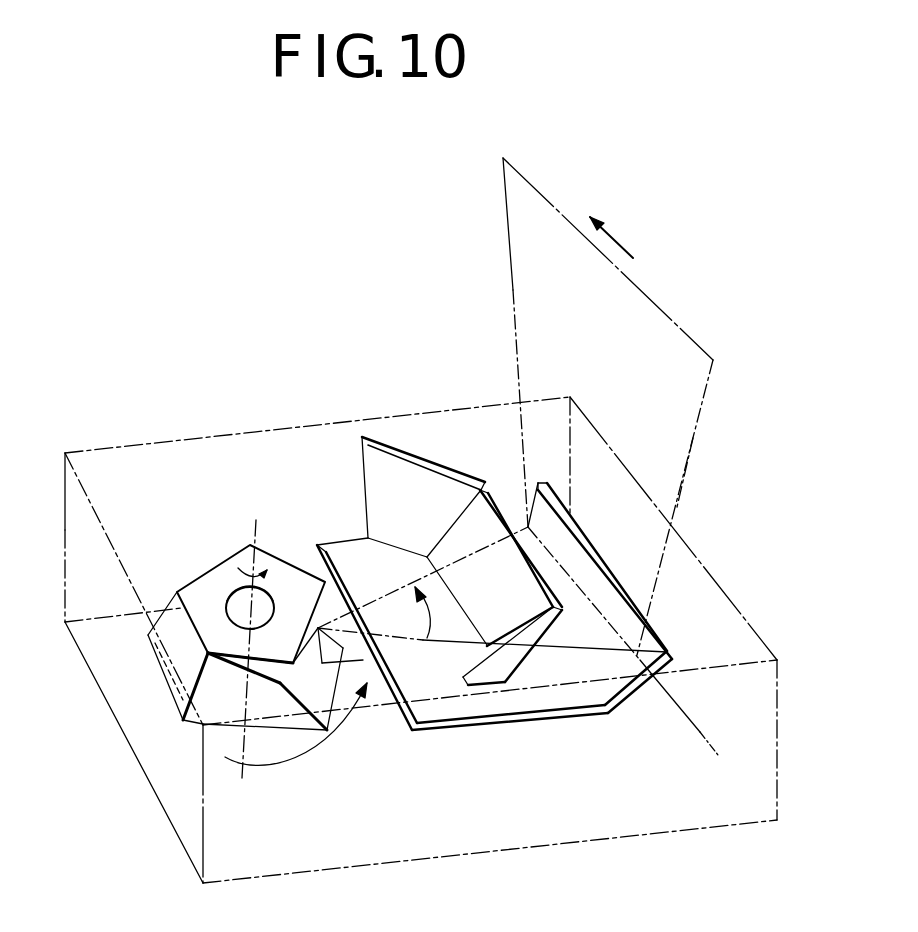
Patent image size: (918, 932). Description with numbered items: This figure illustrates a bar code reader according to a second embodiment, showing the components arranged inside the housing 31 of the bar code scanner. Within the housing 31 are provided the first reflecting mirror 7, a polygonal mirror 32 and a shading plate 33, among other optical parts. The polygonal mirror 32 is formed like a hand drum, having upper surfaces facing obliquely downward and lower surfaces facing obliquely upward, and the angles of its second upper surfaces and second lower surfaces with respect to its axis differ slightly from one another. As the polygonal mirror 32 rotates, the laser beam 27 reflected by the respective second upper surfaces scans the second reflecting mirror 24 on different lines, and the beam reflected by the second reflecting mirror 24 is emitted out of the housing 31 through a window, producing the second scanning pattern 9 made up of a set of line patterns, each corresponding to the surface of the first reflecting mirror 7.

The housing 31 is at (297, 437).
The polygonal mirror 32 is at (208, 578).
The first reflecting mirror 7 is at (410, 478).
The shading plate 33 is at (513, 698).
The second reflecting mirror 24 is at (653, 645).
The laser beam 27 is at (687, 478).
The wall 9 is at (678, 328).